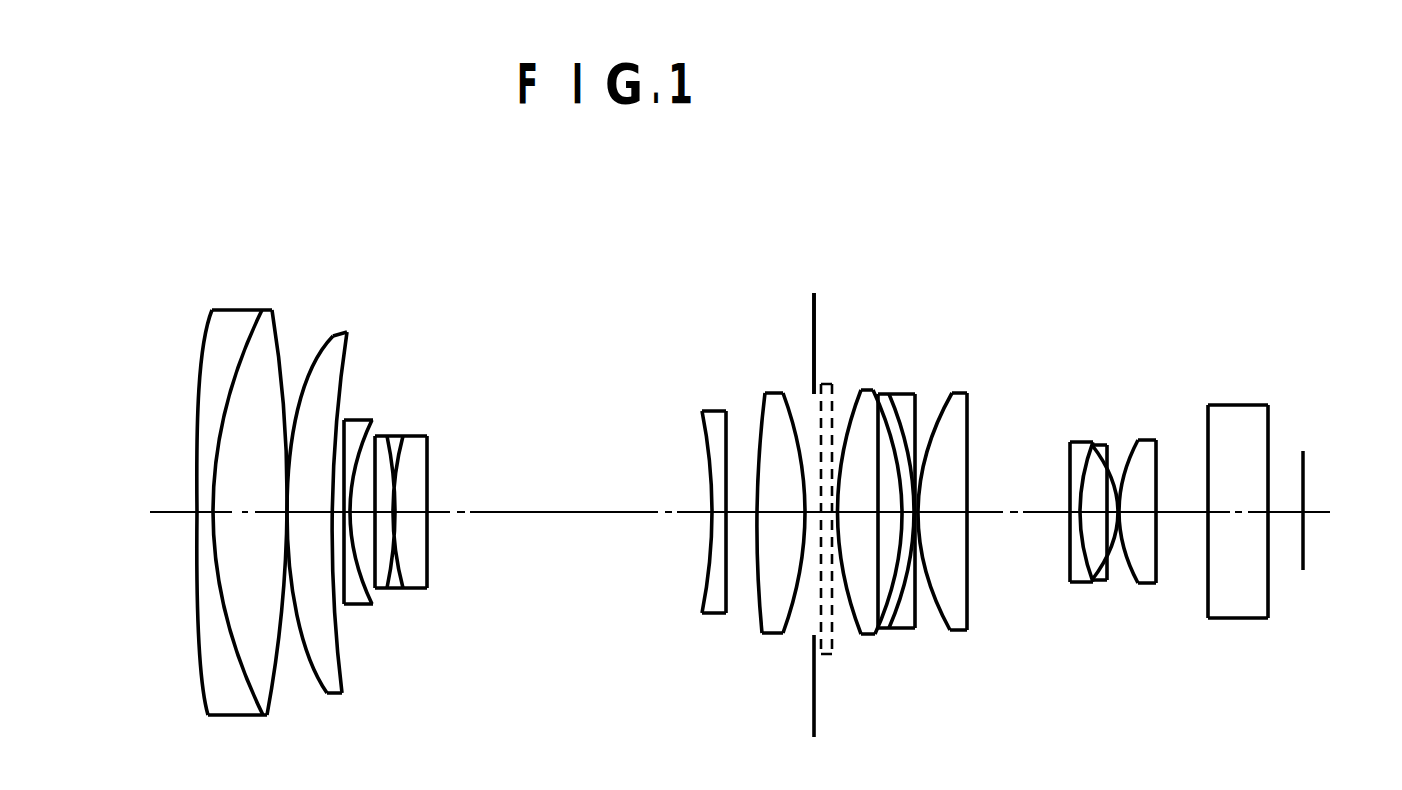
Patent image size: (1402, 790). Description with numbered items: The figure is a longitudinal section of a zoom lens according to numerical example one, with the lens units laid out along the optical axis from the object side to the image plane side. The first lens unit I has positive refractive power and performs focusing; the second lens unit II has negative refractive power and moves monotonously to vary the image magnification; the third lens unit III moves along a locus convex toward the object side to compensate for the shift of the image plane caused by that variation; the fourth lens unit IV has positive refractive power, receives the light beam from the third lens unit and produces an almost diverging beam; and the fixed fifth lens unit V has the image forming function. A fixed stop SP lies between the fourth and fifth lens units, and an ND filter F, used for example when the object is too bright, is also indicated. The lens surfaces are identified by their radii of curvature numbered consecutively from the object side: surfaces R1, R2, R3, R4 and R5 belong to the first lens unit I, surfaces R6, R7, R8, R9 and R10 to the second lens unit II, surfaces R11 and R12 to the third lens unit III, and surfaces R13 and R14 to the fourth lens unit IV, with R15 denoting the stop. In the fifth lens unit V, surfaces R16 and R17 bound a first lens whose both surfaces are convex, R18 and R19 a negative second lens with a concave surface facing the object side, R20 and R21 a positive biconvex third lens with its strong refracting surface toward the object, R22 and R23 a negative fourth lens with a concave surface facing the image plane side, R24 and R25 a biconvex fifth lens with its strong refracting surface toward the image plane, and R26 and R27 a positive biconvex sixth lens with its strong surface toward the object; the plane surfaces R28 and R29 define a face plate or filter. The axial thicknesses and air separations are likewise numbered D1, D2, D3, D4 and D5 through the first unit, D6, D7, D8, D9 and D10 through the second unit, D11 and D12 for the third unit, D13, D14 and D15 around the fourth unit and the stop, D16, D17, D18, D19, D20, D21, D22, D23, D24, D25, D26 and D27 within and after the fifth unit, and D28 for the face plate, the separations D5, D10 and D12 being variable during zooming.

The first lens unit I is at (165, 197).
The second lens unit II is at (440, 197).
The third lens unit III is at (727, 192).
The fourth lens unit IV is at (808, 192).
The fifth lens unit V is at (1172, 192).
The stop SP is at (813, 708).
The ND filter F is at (822, 655).
The radius of curvature of first lens surface R1 is at (204, 343).
The radius of curvature of second lens surface R2 is at (240, 350).
The radius of curvature of third lens surface R3 is at (283, 345).
The radius of curvature of fourth lens surface R4 is at (310, 362).
The radius of curvature of fifth lens surface R5 is at (345, 337).
The radius of curvature of sixth lens surface R6 is at (349, 420).
The radius of curvature of seventh lens surface R7 is at (369, 423).
The radius of curvature of eighth lens surface R8 is at (388, 437).
The radius of curvature of ninth lens surface R9 is at (405, 437).
The radius of curvature of tenth lens surface R10 is at (428, 437).
The radius of curvature of eleventh lens surface R11 is at (702, 445).
The radius of curvature of twelfth lens surface R12 is at (727, 445).
The radius of curvature of thirteenth lens surface R13 is at (760, 420).
The radius of curvature of fourteenth lens surface R14 is at (797, 412).
The stop surface R15 is at (814, 293).
The radius of curvature of sixteenth lens surface R16 is at (849, 388).
The radius of curvature of seventeenth lens surface R17 is at (876, 410).
The radius of curvature of eighteenth lens surface R18 is at (893, 392).
The radius of curvature of nineteenth lens surface R19 is at (907, 445).
The radius of curvature of twentieth lens surface R20 is at (951, 390).
The radius of curvature of twenty-first lens surface R21 is at (965, 395).
The radius of curvature of twenty-second lens surface R22 is at (1068, 468).
The radius of curvature of twenty-third lens surface R23 is at (1074, 455).
The radius of curvature of twenty-fourth lens surface R24 is at (1087, 444).
The radius of curvature of twenty-fifth lens surface R25 is at (1110, 447).
The radius of curvature of twenty-sixth lens surface R26 is at (1130, 463).
The radius of curvature of twenty-seventh lens surface R27 is at (1138, 443).
The face plate surface R28 is at (1208, 430).
The face plate surface R29 is at (1268, 433).
The axial thickness D1 is at (195, 512).
The axial thickness D2 is at (253, 512).
The air separation D3 is at (303, 512).
The axial thickness D4 is at (311, 512).
The variable air separation D5 is at (334, 512).
The axial thickness D6 is at (348, 512).
The air separation D7 is at (366, 512).
The axial thickness D8 is at (391, 512).
The axial thickness D9 is at (426, 512).
The variable air separation D10 is at (520, 512).
The axial thickness D11 is at (713, 512).
The variable air separation D12 is at (743, 512).
The axial thickness D13 is at (785, 512).
The air separation D14 is at (812, 512).
The air separation D15 is at (835, 512).
The axial thickness D16 is at (857, 512).
The air separation D17 is at (905, 512).
The axial thickness D18 is at (912, 512).
The air separation D19 is at (930, 512).
The axial thickness D20 is at (960, 512).
The air separation D21 is at (997, 512).
The axial thickness D22 is at (1070, 512).
The air separation D23 is at (1085, 512).
The axial thickness D24 is at (1103, 512).
The air separation D25 is at (1117, 512).
The axial thickness D26 is at (1138, 512).
The air separation D27 is at (1180, 512).
The axial thickness D28 is at (1235, 512).